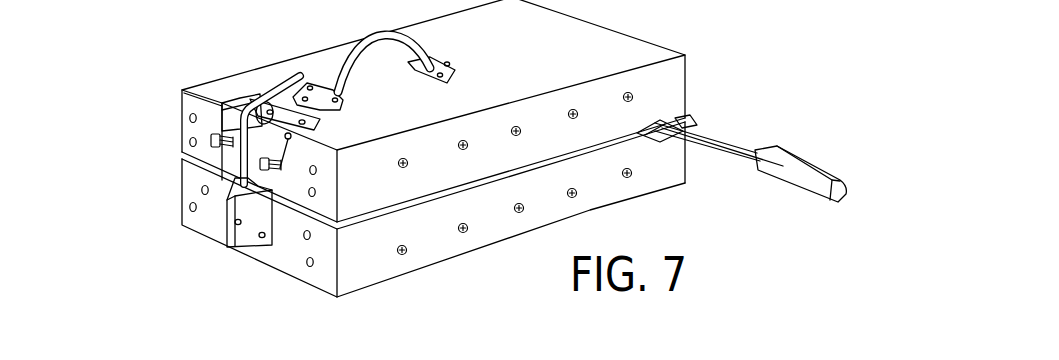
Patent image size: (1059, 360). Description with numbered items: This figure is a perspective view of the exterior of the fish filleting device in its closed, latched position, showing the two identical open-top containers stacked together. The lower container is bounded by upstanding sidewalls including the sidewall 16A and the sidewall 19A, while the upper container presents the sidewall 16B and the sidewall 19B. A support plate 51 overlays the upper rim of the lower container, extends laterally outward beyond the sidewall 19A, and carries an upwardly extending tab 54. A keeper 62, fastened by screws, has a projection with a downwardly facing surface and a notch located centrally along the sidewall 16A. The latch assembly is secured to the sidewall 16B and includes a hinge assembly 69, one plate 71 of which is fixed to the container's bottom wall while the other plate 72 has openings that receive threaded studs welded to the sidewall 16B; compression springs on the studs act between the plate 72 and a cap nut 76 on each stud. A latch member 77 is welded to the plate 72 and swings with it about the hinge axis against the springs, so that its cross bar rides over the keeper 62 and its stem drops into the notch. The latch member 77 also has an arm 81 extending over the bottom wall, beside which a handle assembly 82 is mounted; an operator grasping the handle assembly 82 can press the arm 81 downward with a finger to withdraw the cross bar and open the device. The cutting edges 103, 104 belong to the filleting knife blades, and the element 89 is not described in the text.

The sidewall 16A is at (415, 164).
The sidewall 16B is at (433, 111).
The sidewall 19A is at (492, 228).
The sidewall 19B is at (480, 137).
The support plate 51 is at (678, 147).
The tab 54 is at (687, 117).
The keeper 62 is at (242, 239).
The hinge assembly 69 is at (217, 95).
The plate 71 is at (247, 107).
The plate 72 is at (222, 125).
The cap nut 76 is at (225, 142).
The latch member 77 is at (238, 167).
The arm 81 is at (284, 86).
The handle assembly 82 is at (377, 27).
The leg 89 is at (119, 6).
The cutting edge 103 is at (750, 178).
The cutting edge 104 is at (800, 174).